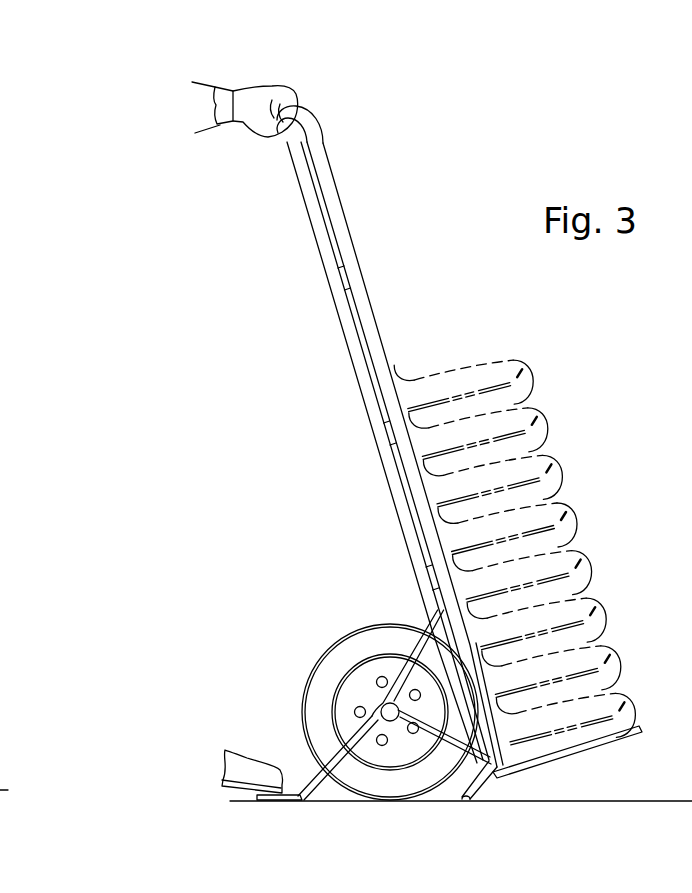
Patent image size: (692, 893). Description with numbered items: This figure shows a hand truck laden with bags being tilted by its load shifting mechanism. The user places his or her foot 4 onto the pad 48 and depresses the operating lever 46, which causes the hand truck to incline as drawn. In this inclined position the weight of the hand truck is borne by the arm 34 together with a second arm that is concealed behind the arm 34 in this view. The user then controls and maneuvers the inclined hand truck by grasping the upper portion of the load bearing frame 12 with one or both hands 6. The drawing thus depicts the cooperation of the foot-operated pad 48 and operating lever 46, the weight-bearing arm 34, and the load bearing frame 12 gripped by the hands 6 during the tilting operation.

The foot 4 is at (203, 767).
The hands 6 is at (263, 90).
The load bearing frame 12 is at (307, 118).
The arm 34 is at (477, 788).
The operating lever 46 is at (322, 720).
The pad 48 is at (258, 797).